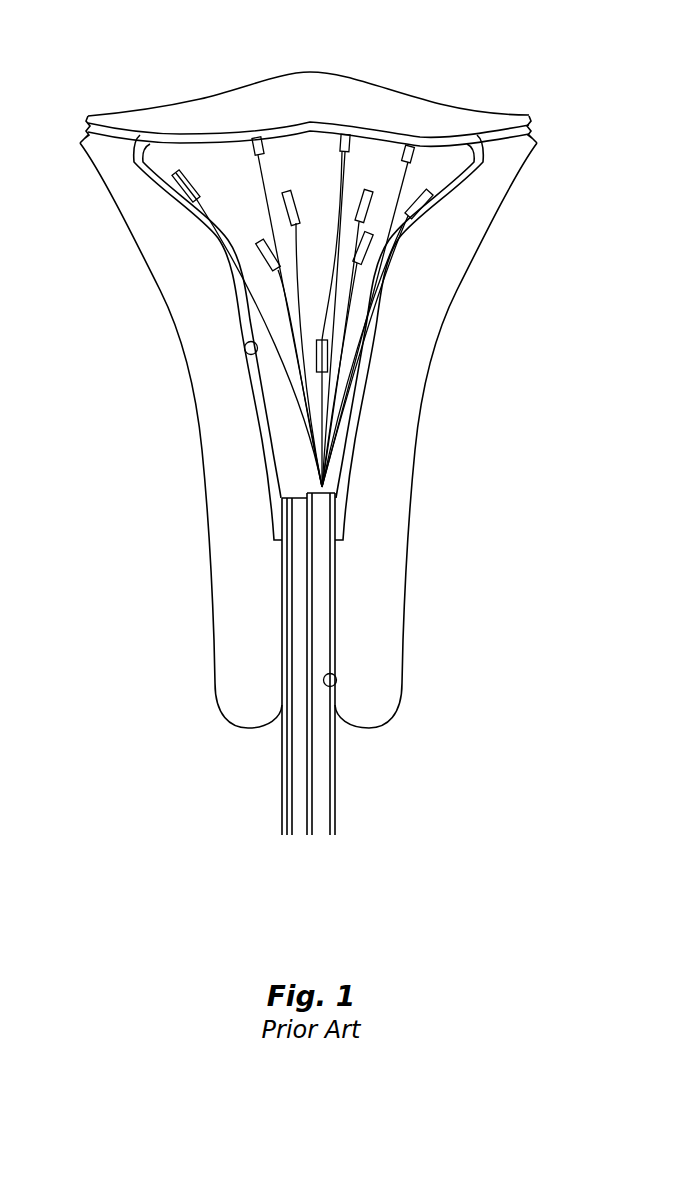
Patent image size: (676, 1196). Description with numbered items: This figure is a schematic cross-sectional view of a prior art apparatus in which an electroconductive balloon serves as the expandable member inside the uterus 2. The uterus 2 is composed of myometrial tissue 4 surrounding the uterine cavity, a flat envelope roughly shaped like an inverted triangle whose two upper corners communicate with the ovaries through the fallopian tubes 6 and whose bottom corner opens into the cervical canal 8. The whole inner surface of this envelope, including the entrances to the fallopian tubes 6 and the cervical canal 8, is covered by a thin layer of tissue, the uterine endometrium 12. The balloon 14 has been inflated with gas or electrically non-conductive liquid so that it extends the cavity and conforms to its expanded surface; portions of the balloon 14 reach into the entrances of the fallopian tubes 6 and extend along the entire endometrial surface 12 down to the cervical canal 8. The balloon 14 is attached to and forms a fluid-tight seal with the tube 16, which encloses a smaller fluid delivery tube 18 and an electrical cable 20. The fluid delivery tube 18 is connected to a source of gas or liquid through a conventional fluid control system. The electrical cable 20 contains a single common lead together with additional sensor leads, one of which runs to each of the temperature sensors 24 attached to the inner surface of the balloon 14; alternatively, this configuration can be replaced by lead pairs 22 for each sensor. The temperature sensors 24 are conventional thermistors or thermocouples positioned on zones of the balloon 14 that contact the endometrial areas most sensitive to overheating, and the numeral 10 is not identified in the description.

The uterus 2 is at (156, 484).
The myometrial tissue 4 is at (434, 323).
The fallopian tubes 6 is at (105, 135).
The cervical canal 8 is at (332, 689).
The band 10 is at (388, 137).
The uterine endometrium 12 is at (245, 347).
The balloon 14 is at (231, 283).
The tube 16 is at (282, 565).
The fluid delivery tube 18 is at (300, 632).
The electrical cable 20 is at (322, 613).
The lead pairs 22 is at (342, 173).
The temperature sensors 24 is at (285, 218).